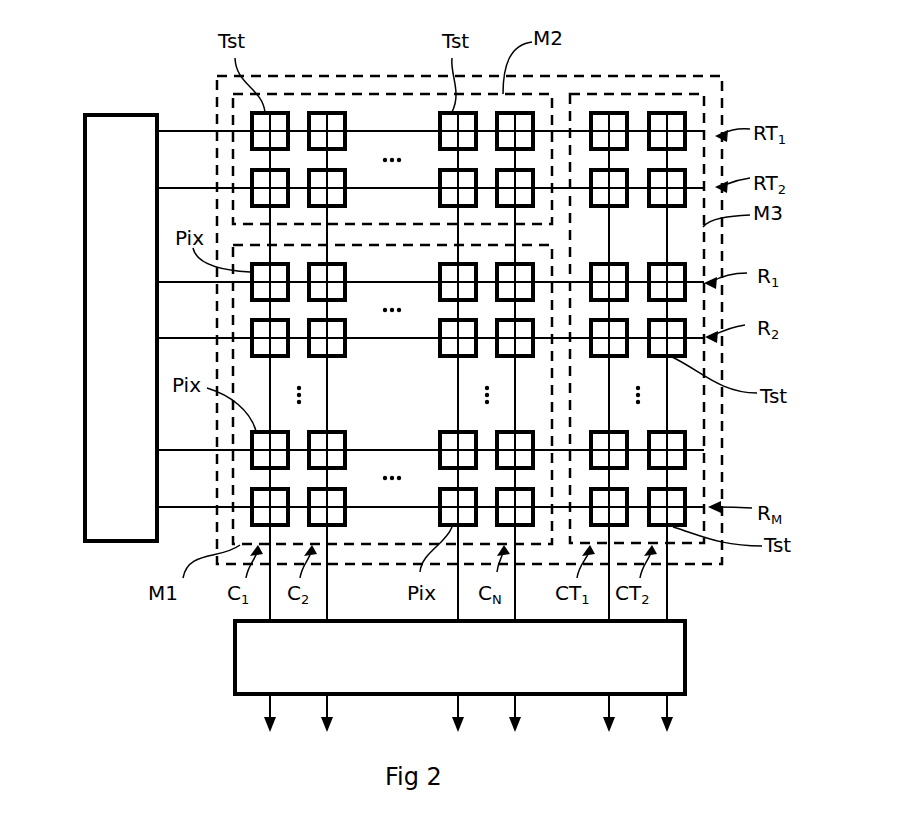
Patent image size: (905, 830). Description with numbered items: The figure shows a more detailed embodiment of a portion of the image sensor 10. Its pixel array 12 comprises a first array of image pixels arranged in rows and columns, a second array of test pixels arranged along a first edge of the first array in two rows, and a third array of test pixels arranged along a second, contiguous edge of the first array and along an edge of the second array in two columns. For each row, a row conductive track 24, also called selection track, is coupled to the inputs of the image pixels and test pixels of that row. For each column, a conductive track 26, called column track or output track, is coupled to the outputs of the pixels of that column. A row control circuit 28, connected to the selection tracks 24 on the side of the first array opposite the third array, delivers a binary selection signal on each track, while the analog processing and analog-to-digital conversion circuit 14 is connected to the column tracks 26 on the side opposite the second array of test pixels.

The image sensor 10 is at (720, 63).
The pixel array 12 is at (320, 77).
The analog processing and analog-to-digital conversion circuit 14 is at (232, 658).
The row conductive track 24 is at (203, 131).
The column conductive track 26 is at (328, 608).
The row control circuit 28 is at (113, 113).